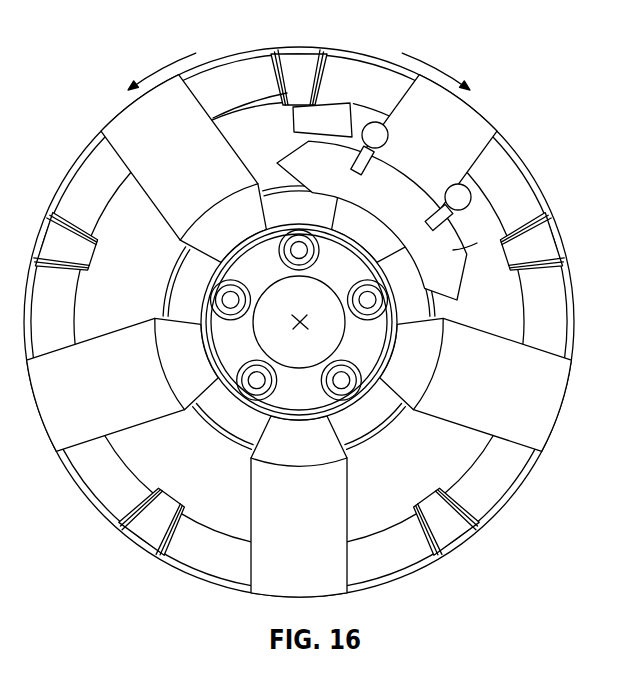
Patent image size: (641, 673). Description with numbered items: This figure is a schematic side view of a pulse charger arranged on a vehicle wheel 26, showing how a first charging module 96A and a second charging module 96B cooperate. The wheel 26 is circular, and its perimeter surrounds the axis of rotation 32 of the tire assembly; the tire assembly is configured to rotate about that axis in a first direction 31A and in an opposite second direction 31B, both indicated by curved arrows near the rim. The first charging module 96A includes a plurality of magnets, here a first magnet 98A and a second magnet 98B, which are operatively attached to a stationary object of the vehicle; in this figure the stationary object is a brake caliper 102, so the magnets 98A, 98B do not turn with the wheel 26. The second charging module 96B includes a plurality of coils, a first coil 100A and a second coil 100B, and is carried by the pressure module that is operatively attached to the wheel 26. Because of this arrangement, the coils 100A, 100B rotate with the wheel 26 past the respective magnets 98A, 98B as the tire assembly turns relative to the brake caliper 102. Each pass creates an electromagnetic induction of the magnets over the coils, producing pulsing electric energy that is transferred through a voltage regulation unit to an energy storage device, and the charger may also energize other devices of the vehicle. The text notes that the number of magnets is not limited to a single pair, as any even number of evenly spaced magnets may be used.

The wheel 26 is at (474, 133).
The axis of rotation 32 is at (302, 324).
The first direction 31A is at (433, 60).
The second direction 31B is at (165, 59).
The first charging module 96A is at (407, 203).
The second charging module 96B is at (318, 84).
The first magnet 98A is at (471, 196).
The second magnet 98B is at (388, 136).
The first coil 100A is at (213, 119).
The second coil 100B is at (351, 102).
The brake caliper 102 is at (453, 250).